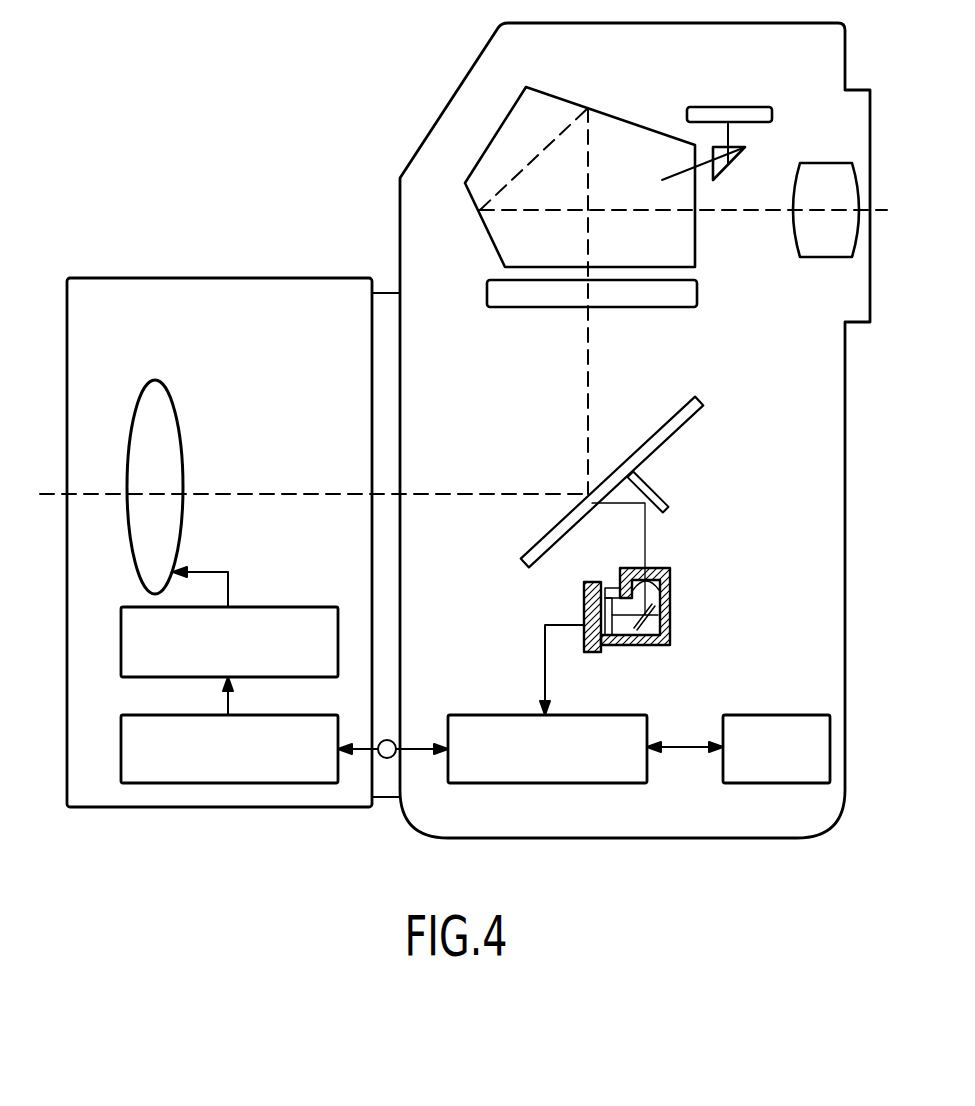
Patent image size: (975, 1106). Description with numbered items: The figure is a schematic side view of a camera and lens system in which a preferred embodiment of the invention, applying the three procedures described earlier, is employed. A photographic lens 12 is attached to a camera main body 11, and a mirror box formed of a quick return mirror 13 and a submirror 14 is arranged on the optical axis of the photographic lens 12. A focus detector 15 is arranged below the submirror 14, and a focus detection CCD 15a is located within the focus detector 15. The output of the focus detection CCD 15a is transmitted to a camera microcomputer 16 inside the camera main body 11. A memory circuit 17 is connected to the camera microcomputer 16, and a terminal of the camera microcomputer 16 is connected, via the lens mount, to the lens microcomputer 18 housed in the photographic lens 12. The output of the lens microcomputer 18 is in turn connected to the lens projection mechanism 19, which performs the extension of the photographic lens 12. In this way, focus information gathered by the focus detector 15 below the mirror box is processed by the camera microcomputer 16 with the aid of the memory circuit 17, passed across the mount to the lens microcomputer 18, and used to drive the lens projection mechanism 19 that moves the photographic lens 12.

The camera main body 11 is at (414, 179).
The photographic lens 12 is at (208, 278).
The quick return mirror 13 is at (693, 402).
The submirror 14 is at (665, 506).
The focus detector 15 is at (671, 577).
The focus detection CCD 15a is at (585, 615).
The camera microcomputer 16 is at (470, 715).
The memory circuit 17 is at (770, 715).
The lens microcomputer 18 is at (121, 738).
The lens projection mechanism 19 is at (121, 638).